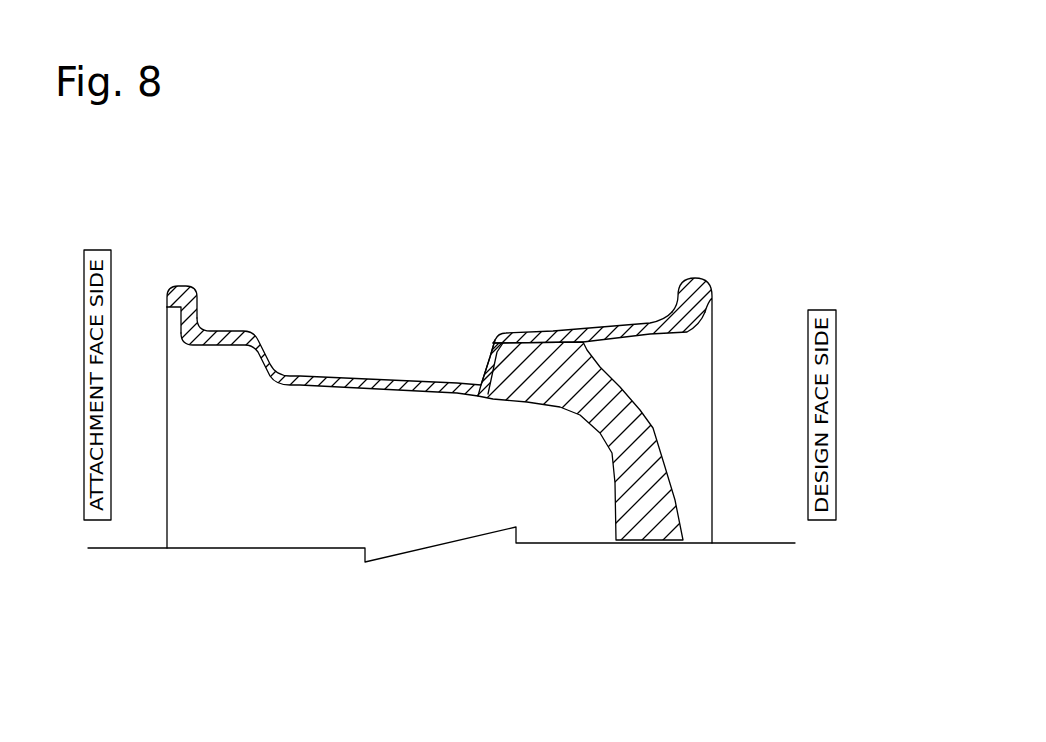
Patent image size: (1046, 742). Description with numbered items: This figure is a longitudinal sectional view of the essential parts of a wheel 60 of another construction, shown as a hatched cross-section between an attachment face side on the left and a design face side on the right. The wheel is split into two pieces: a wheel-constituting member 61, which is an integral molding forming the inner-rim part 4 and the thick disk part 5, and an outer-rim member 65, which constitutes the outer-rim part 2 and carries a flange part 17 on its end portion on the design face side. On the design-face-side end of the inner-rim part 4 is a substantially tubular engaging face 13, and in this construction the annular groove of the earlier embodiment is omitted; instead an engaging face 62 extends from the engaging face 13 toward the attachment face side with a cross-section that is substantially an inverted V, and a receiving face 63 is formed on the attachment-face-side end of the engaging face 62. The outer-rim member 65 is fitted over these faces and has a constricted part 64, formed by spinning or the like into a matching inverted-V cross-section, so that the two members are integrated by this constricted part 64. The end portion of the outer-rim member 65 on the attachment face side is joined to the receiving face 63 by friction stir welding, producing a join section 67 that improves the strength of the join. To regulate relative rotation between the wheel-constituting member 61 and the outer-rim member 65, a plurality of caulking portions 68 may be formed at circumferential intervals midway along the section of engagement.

The outer-rim part 2 is at (597, 330).
The inner-rim part 4 is at (340, 372).
The disk part 5 is at (660, 414).
The engaging face 13 is at (558, 333).
The flange part 17 is at (702, 280).
The wheel 60 is at (459, 355).
The wheel-constituting member 61 is at (298, 322).
The engaging face 62 is at (522, 338).
The receiving face 63 is at (492, 348).
The constricted part 64 is at (496, 342).
The outer-rim member 65 is at (733, 293).
The join section 67 is at (484, 380).
The caulking portions 68 is at (543, 330).